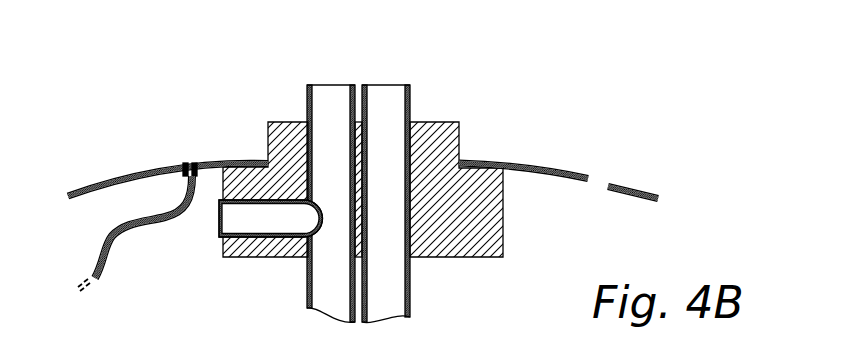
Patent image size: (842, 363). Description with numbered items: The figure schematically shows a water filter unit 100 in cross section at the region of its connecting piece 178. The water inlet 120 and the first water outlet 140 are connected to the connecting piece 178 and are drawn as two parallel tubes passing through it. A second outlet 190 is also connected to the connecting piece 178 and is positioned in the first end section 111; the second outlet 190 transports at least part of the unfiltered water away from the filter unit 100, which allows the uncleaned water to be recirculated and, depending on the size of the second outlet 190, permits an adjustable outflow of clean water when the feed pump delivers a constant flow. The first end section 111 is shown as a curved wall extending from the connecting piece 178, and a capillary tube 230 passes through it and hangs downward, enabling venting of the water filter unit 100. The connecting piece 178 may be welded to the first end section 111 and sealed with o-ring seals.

The water filter unit 100 is at (102, 78).
The first end section 111 is at (97, 181).
The water inlet 120 is at (323, 85).
The first water outlet 140 is at (393, 85).
The connecting piece 178 is at (433, 137).
The second outlet 190 is at (602, 180).
The capillary tube 230 is at (188, 167).